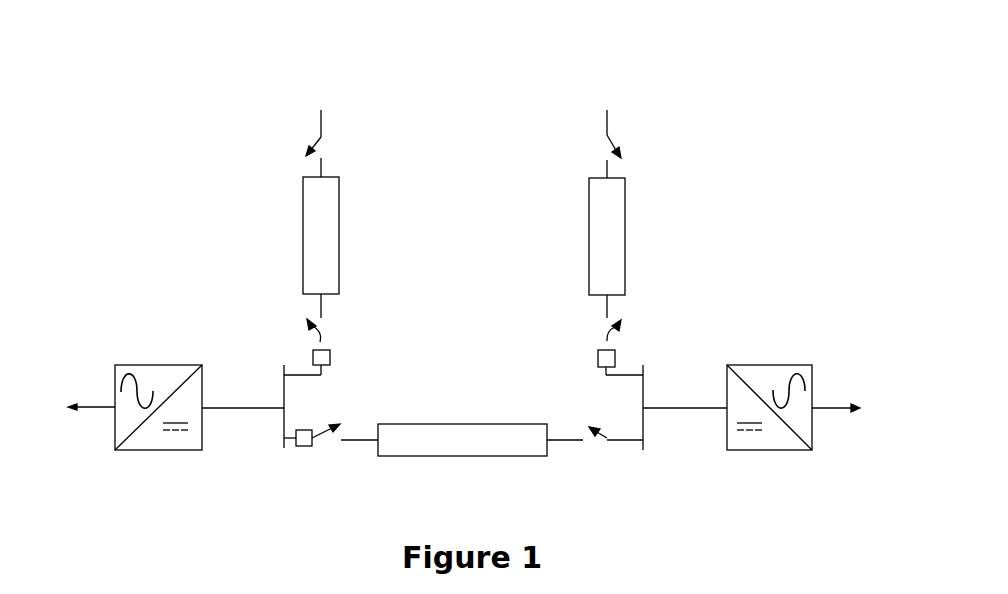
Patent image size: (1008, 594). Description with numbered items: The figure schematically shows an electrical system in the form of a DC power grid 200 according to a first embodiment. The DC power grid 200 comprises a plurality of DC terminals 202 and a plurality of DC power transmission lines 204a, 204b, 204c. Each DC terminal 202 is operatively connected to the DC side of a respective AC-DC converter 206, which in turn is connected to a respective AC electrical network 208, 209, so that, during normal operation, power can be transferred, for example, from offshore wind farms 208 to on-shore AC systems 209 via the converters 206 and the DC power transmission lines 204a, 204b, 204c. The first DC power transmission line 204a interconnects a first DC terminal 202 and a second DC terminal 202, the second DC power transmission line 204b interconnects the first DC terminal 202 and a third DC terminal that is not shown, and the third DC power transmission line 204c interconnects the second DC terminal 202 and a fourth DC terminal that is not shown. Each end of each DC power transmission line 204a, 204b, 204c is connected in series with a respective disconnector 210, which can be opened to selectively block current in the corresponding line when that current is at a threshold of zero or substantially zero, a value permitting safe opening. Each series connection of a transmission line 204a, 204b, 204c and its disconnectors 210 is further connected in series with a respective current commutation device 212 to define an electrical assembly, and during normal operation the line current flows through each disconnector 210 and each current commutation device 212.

The DC power grid 200 is at (236, 193).
The DC terminal 202 is at (321, 102).
The first DC power transmission line 204a is at (459, 438).
The second DC power transmission line 204b is at (323, 225).
The third DC power transmission line 204c is at (604, 222).
The AC-DC converter 206 is at (147, 438).
The AC electrical network 208 is at (71, 408).
The AC electrical network 209 is at (860, 409).
The disconnector 210 is at (614, 150).
The current commutation device 212 is at (314, 356).